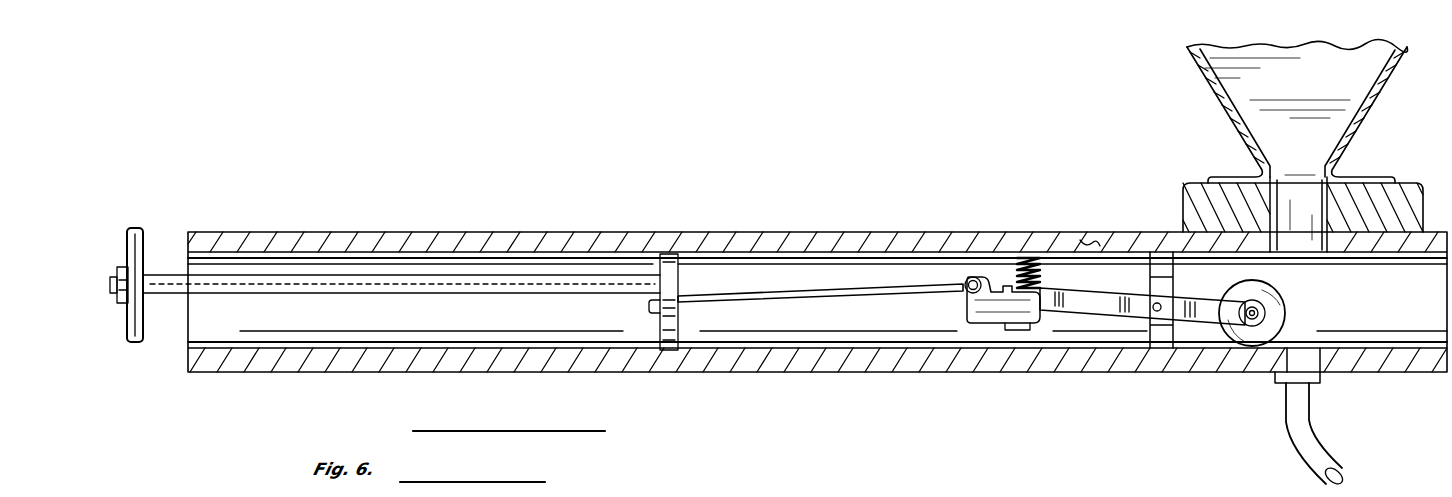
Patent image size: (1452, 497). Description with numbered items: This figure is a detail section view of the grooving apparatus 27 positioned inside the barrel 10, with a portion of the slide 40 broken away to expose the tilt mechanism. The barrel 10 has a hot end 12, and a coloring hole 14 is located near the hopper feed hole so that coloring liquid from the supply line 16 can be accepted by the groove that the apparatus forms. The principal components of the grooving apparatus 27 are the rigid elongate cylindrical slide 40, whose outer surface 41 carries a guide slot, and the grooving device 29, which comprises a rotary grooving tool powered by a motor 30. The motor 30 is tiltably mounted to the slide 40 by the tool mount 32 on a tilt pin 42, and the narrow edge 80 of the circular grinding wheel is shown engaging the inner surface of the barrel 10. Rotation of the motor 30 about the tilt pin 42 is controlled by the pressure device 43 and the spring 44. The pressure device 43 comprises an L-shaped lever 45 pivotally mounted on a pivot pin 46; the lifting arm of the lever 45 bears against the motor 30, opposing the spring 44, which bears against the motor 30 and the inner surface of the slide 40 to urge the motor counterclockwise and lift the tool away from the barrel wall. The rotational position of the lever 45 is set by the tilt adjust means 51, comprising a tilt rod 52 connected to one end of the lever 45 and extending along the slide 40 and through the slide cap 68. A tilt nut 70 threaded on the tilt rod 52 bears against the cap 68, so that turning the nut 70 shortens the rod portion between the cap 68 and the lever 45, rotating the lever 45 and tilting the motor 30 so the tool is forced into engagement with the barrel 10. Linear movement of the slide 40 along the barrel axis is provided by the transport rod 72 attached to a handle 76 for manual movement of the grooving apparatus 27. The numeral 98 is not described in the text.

The barrel 10 is at (543, 355).
The hot end 12 is at (225, 233).
The coloring hole 14 is at (1300, 358).
The supply line 16 is at (1287, 448).
The grooving apparatus 27 is at (821, 268).
The grooving device 29 is at (1185, 237).
The motor 30 is at (1063, 280).
The tool mount 32 is at (1147, 330).
The slide 40 is at (757, 331).
The outer surface 41 is at (1092, 243).
The tilt pin 42 is at (1156, 303).
The pressure device 43 is at (1012, 324).
The spring 44 is at (958, 284).
The lever 45 is at (967, 283).
The pivot pin 46 is at (980, 310).
The tilt adjust means 51 is at (911, 296).
The tilt rod 52 is at (862, 297).
The slide cap 68 is at (670, 265).
The tilt nut 70 is at (657, 315).
The transport rod 72 is at (360, 275).
The handle 76 is at (133, 226).
The narrow edge 80 is at (1222, 340).
The axle 98 is at (1252, 337).